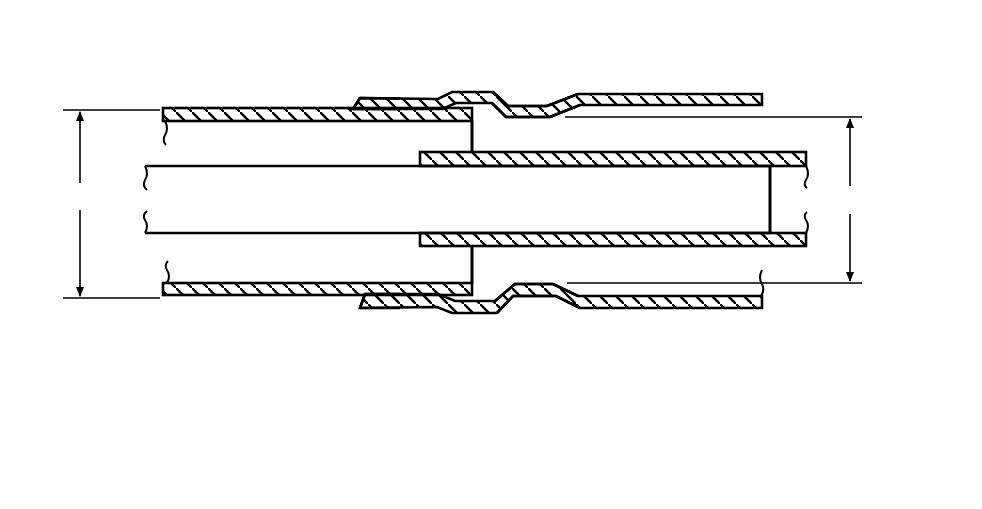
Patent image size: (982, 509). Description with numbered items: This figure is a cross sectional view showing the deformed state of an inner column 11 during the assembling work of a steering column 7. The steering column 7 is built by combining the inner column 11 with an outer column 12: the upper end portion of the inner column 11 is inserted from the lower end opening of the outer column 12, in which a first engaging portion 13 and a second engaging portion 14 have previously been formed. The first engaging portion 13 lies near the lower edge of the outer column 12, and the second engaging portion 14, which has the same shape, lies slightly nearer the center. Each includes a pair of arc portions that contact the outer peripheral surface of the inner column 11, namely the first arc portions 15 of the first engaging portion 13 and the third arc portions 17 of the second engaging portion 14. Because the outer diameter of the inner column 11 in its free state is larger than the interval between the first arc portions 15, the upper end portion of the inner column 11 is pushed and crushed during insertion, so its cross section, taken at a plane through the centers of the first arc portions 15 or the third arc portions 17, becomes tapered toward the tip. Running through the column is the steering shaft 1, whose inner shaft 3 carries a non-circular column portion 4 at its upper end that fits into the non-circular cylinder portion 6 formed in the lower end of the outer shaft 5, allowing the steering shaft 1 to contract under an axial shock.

The steering shaft 1 is at (766, 139).
The inner shaft 3 is at (252, 215).
The non-circular column portion 4 is at (322, 215).
The outer shaft 5 is at (639, 152).
The non-circular cylinder portion 6 is at (556, 152).
The steering column 7 is at (620, 90).
The inner column 11 is at (249, 108).
The outer column 12 is at (666, 321).
The first engaging portion 13 is at (412, 99).
The second engaging portion 14 is at (540, 100).
The first arc portions 15 is at (393, 120).
The third arc portions 17 is at (530, 118).